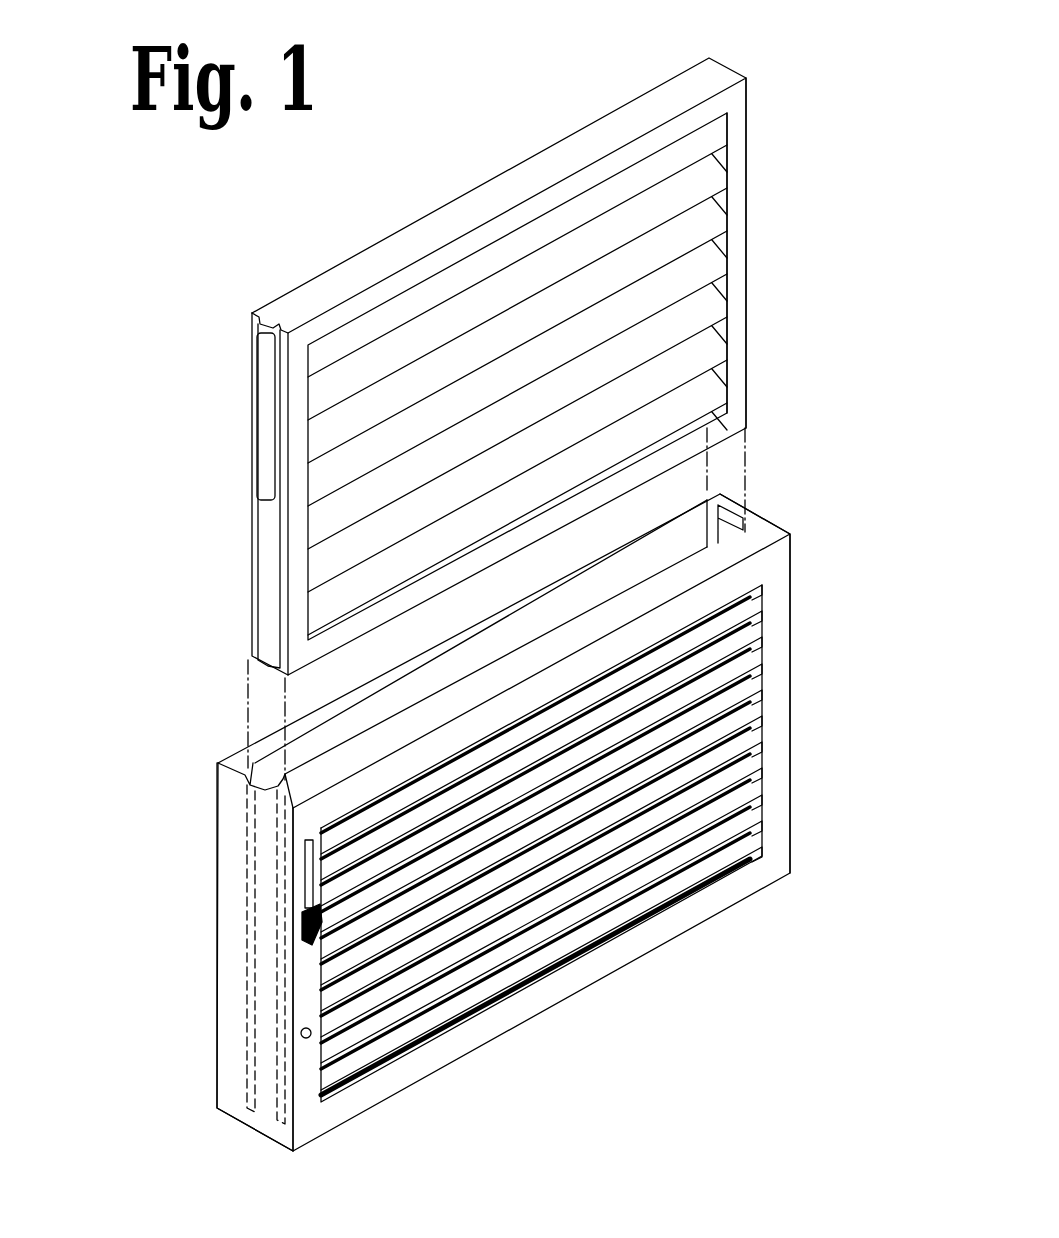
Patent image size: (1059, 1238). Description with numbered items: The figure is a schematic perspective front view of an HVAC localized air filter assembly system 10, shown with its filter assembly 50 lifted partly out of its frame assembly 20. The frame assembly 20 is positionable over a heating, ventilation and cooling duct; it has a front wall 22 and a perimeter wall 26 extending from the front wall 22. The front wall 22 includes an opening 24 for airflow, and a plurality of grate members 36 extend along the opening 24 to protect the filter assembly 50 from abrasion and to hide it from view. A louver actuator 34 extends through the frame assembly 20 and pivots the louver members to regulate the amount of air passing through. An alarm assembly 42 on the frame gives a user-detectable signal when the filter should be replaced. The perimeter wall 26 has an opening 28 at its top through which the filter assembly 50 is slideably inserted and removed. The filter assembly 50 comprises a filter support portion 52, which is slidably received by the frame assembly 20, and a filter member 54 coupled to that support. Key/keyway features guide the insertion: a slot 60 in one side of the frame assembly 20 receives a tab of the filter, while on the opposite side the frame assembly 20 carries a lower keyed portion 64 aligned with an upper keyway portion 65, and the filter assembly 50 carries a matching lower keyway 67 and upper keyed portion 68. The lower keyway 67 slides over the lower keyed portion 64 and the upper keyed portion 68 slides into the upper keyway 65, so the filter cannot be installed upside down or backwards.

The HVAC localized air filter assembly system 10 is at (184, 718).
The frame assembly 20 is at (770, 868).
The front wall 22 is at (777, 563).
The opening 24 is at (732, 668).
The perimeter wall 26 is at (236, 846).
The opening 28 is at (377, 710).
The louver actuator 34 is at (316, 934).
The grate members 36 is at (672, 868).
The alarm assembly 42 is at (312, 1038).
The filter assembly 50 is at (513, 182).
The filter support portion 52 is at (733, 146).
The filter member 54 is at (683, 268).
The slot 60 is at (720, 494).
The lower keyed portion 64 is at (263, 1072).
The upper keyway portion 65 is at (252, 766).
The lower keyway 67 is at (266, 548).
The upper keyed portion 68 is at (266, 403).